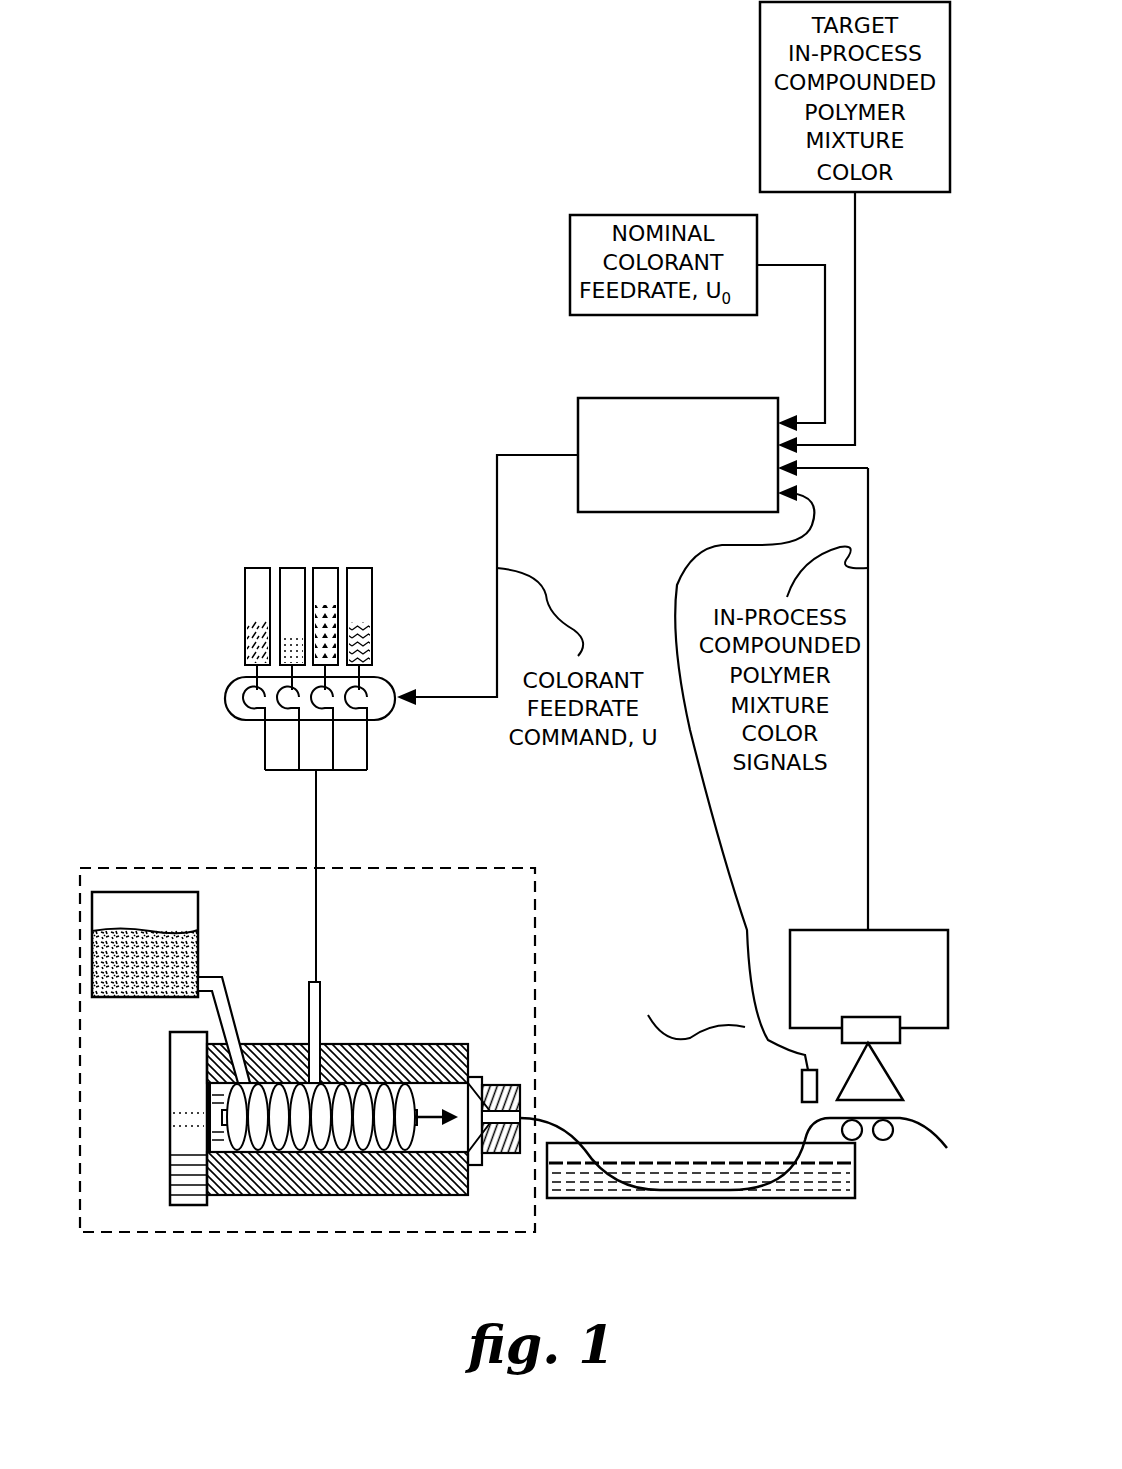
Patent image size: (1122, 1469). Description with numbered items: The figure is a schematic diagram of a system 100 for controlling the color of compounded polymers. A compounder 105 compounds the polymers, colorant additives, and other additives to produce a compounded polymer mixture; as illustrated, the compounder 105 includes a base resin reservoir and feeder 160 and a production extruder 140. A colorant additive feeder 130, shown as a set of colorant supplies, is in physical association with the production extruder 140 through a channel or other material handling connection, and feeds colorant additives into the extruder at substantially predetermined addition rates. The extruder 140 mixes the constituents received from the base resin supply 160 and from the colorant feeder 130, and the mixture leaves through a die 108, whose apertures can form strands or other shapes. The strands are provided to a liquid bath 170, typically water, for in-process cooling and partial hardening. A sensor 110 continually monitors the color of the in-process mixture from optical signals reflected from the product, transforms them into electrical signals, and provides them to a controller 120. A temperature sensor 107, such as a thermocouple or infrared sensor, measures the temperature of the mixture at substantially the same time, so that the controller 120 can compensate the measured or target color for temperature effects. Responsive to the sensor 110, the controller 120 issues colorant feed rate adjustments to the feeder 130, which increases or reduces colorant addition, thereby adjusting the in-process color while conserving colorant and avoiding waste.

The system for controlling the color of compounded polymer 100 is at (416, 422).
The compounder 105 is at (503, 868).
The temperature sensor 107 is at (800, 1087).
The die 108 is at (476, 1092).
The sensor 110 is at (817, 930).
The controller 120 is at (690, 410).
The colorant additive feeder 130 is at (392, 717).
The production extruder 140 is at (350, 1195).
The base resin reservoir and feeder 160 is at (198, 940).
The liquid bath 170 is at (775, 1198).